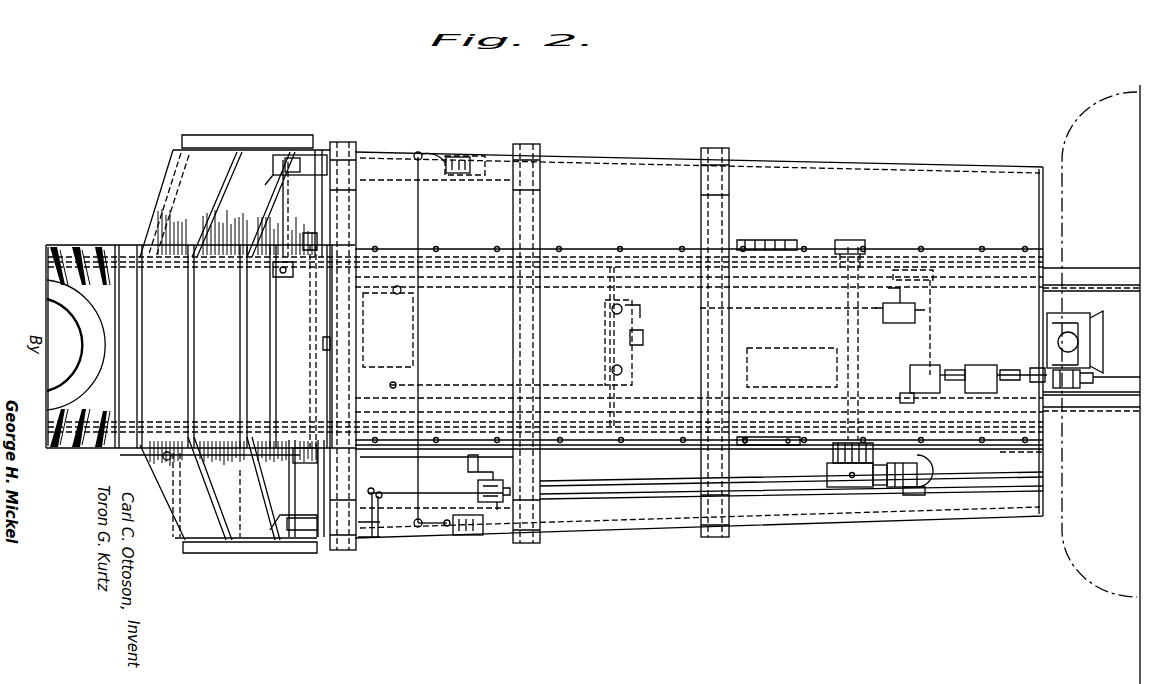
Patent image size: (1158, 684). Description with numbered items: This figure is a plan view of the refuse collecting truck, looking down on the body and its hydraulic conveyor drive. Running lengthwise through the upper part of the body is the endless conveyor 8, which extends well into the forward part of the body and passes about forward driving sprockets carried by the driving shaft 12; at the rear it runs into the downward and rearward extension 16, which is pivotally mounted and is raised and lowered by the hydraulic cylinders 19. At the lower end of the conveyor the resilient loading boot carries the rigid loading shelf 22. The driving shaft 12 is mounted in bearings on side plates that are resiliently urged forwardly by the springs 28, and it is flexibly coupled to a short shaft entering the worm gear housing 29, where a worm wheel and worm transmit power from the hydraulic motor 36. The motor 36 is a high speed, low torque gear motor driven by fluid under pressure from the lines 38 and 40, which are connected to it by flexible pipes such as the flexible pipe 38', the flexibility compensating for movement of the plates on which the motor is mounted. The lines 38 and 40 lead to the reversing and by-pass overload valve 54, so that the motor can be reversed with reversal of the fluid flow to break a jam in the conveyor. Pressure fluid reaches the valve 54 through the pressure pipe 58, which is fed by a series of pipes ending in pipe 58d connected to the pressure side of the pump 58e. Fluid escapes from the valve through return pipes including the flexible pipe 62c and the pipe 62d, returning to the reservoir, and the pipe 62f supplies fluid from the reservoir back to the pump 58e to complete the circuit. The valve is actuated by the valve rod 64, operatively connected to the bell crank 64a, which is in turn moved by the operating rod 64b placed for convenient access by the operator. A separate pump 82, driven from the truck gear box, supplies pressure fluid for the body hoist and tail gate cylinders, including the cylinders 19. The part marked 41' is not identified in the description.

The endless conveyor 8 is at (630, 257).
The driving shaft 12 is at (848, 299).
The downward and rearward extension 16 is at (153, 352).
The hydraulic cylinders 19 is at (392, 158).
The rigid loading shelf 22 is at (50, 299).
The springs 28 is at (772, 248).
The worm gear housing 29 is at (832, 484).
The hydraulic motor 36 is at (927, 479).
The fluid line 38 is at (791, 471).
The flexible pipe 38' is at (937, 468).
The fluid line 40 is at (627, 496).
The lever 41' is at (915, 500).
The reversing and by-pass overload valve 54 is at (497, 502).
The pressure pipe 58 is at (402, 497).
The pipe 58d is at (1015, 461).
The pump 58e is at (988, 360).
The pipe 62c is at (775, 346).
The pipe 62d is at (640, 402).
The pipe 62f is at (878, 367).
The valve rod 64 is at (497, 478).
The bell crank 64a is at (476, 474).
The operating rod 64b is at (155, 457).
The pump 82 is at (940, 367).